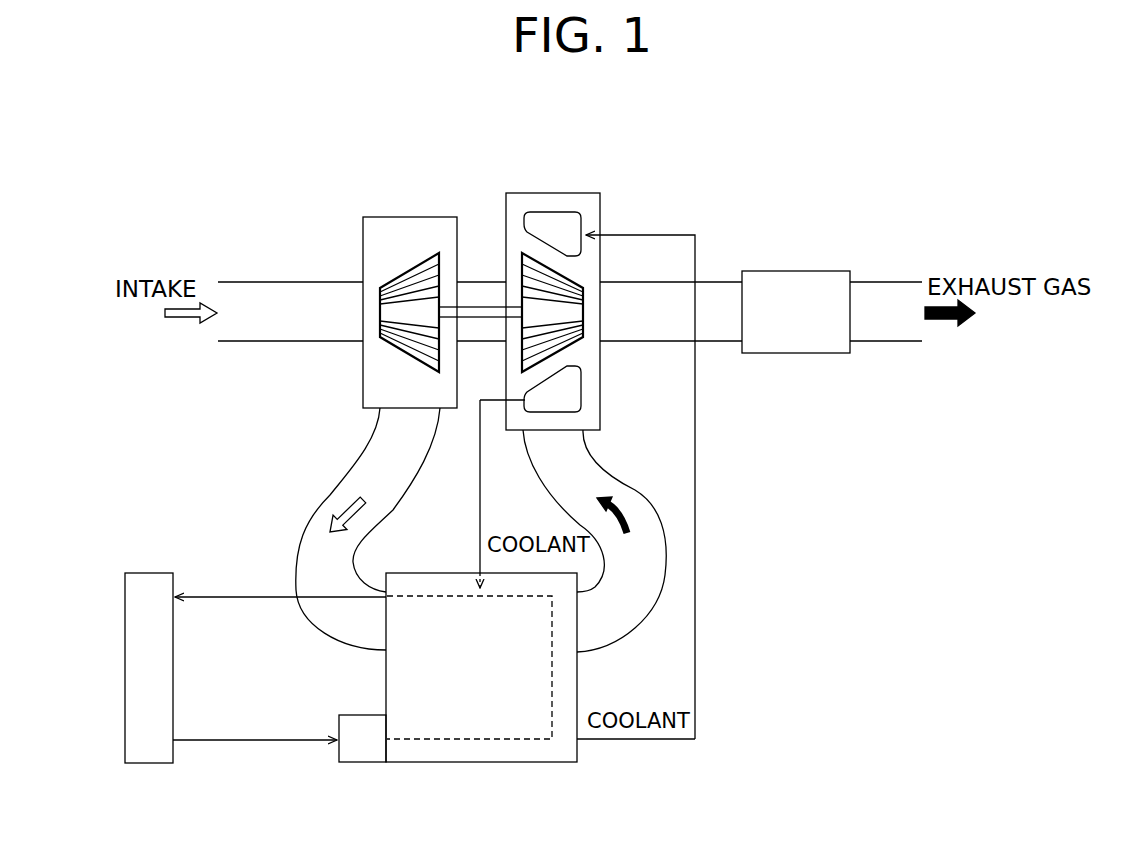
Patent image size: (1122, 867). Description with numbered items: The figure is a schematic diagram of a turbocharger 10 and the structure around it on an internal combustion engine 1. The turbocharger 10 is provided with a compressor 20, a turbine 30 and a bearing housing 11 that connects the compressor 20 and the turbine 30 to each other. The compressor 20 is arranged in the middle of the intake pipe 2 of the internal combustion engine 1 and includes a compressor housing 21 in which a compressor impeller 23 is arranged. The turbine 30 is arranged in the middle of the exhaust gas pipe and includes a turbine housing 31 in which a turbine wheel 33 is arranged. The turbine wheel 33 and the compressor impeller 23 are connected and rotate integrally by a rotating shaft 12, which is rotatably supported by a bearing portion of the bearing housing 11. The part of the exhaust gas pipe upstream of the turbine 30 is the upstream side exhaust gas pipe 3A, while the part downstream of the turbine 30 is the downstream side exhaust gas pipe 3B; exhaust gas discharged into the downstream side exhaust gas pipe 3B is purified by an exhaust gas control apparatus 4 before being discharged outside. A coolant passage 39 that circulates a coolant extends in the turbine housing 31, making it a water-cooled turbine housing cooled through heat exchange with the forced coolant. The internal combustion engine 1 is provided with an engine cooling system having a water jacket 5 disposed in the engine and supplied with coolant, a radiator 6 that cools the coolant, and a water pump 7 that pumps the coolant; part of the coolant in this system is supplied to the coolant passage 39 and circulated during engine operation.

The internal combustion engine 1 is at (482, 765).
The intake pipe 2 is at (279, 286).
The upstream side exhaust gas pipe 3A is at (649, 600).
The downstream side exhaust gas pipe 3B is at (715, 282).
The exhaust gas control apparatus 4 is at (796, 355).
The water jacket 5 is at (432, 598).
The radiator 6 is at (125, 668).
The water pump 7 is at (362, 765).
The turbocharger 10 is at (478, 186).
The bearing housing 11 is at (481, 282).
The rotating shaft 12 is at (484, 320).
The compressor 20 is at (363, 195).
The compressor housing 21 is at (408, 216).
The compressor impeller 23 is at (410, 268).
The turbine 30 is at (597, 170).
The turbine housing 31 is at (548, 192).
The turbine wheel 33 is at (565, 283).
The coolant passage 39 is at (575, 215).